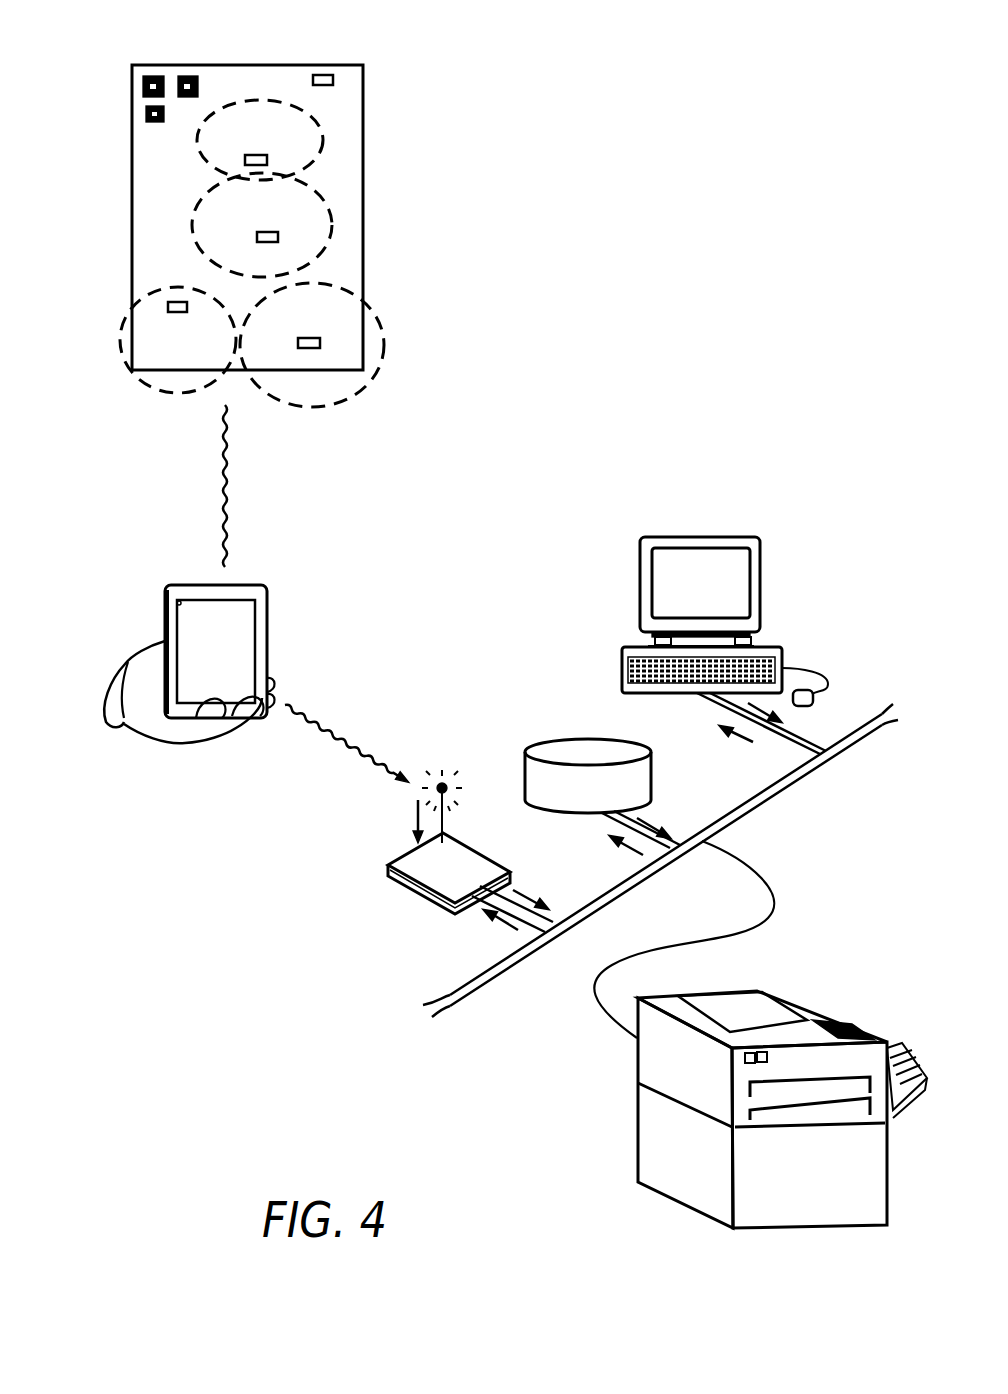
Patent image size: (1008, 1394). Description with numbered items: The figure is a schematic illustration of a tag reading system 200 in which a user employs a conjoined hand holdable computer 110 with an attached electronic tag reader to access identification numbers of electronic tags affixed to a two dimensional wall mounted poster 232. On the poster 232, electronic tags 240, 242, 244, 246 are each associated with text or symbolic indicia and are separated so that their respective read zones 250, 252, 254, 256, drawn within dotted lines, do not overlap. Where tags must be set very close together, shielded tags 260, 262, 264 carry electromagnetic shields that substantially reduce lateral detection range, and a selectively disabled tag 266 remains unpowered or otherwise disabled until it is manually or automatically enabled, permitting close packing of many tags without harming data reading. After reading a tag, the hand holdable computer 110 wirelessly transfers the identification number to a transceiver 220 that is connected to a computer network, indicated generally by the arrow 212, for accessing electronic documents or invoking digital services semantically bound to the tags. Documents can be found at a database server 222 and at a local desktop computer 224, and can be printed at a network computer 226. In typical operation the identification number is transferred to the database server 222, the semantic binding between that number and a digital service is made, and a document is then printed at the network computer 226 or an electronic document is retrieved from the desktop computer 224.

The tag reading system 200 is at (645, 117).
The hand holdable computer 110 is at (282, 610).
The network system 212 is at (573, 587).
The transceiver 220 is at (413, 858).
The database server 222 is at (585, 733).
The desktop computer 224 is at (710, 537).
The network computer (printer) 226 is at (788, 995).
The wall mounted poster 232 is at (365, 92).
The electronic tag 240 is at (267, 160).
The electronic tag 242 is at (278, 237).
The electronic tag 244 is at (320, 343).
The electronic tag 246 is at (172, 302).
The read zone 250 is at (198, 162).
The read zone 252 is at (197, 240).
The read zone 254 is at (337, 290).
The read zone 256 is at (128, 322).
The shielded tag 260 is at (192, 76).
The shielded tag 262 is at (150, 76).
The shielded tag 264 is at (146, 115).
The selectively disabled tag 266 is at (323, 75).